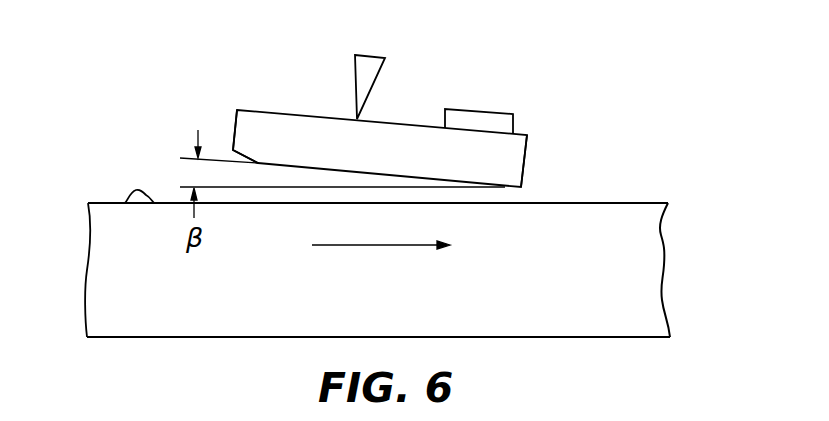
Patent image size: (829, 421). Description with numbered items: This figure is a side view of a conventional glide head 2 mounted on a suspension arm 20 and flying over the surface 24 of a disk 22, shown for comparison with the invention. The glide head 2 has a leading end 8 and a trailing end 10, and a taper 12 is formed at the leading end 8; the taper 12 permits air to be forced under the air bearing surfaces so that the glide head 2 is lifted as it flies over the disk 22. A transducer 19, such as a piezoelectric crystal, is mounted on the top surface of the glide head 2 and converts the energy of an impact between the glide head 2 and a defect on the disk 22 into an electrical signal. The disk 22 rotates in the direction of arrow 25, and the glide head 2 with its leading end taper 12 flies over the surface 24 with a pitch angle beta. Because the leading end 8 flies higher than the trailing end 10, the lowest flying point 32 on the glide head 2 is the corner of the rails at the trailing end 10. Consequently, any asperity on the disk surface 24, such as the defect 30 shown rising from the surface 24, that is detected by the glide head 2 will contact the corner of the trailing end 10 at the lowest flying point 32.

The glide head 2 is at (598, 82).
The leading end 8 is at (232, 150).
The trailing end 10 is at (527, 158).
The taper 12 is at (228, 152).
The transducer 19 is at (470, 109).
The suspension arm 20 is at (355, 82).
The disk 22 is at (171, 315).
The surface 24 is at (648, 203).
The arrow 25 is at (383, 248).
The defect 30 is at (128, 197).
The lowest flying point 32 is at (519, 189).